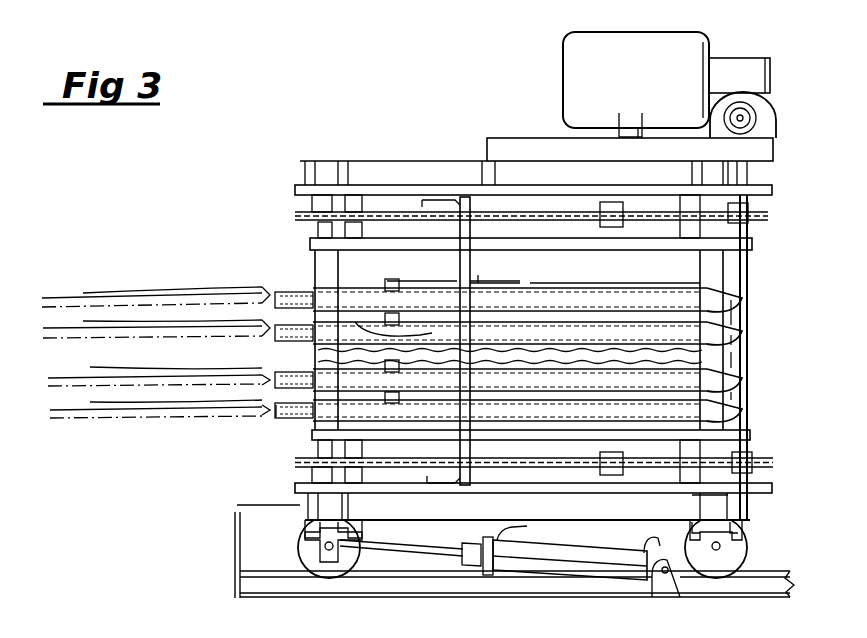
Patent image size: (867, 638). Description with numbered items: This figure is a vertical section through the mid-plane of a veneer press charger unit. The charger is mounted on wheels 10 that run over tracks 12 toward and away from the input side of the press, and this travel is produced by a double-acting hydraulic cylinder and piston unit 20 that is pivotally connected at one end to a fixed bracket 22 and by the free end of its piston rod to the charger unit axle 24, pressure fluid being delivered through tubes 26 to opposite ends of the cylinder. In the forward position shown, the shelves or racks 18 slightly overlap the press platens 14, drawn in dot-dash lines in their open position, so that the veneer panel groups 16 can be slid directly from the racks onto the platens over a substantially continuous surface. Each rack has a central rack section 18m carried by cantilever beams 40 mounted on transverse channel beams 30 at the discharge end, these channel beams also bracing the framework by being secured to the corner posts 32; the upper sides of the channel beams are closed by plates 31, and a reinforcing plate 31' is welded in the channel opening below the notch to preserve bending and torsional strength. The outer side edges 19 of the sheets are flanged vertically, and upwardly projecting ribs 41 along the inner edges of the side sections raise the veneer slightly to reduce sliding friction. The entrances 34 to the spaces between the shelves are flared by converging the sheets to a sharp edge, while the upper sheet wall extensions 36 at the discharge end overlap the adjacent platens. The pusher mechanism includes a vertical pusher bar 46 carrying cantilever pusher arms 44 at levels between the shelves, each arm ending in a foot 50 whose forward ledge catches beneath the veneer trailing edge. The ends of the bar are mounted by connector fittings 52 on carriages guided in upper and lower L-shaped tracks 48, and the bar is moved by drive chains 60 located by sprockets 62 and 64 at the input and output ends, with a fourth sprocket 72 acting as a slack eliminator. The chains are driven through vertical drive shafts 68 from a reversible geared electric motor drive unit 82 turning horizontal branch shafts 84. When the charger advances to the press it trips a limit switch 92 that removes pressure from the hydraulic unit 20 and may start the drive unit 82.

The wheels 10 is at (318, 540).
The tracks 12 is at (776, 590).
The press platens 14 is at (55, 372).
The veneer panel groups 16 is at (165, 290).
The shelves or racks 18 is at (616, 280).
The central rack section 18m is at (509, 301).
The outer side edges 19 is at (480, 282).
The double-acting hydraulic cylinder and piston unit 20 is at (606, 585).
The fixed bracket 22 is at (680, 588).
The charger unit axle 24 is at (318, 549).
The tubes 26 is at (527, 526).
The channel beams 30 is at (272, 342).
The plates 31 is at (246, 439).
The reinforcing plate 31' is at (271, 446).
The corner posts 32 is at (717, 257).
The entrances 34 is at (732, 313).
The upper sheet wall extensions 36 is at (250, 420).
The cantilever beams 40 is at (741, 296).
The upwardly projecting ribs 41 is at (588, 282).
The cantilever pusher arms 44 is at (392, 312).
The vertical pusher bar 46 is at (460, 262).
The L-shaped tracks 48 is at (299, 190).
The foot 50 is at (404, 333).
The connector fittings 52 is at (457, 200).
The drive chains 60 is at (398, 222).
The chain-locating sprocket 62 is at (750, 222).
The chain-locating sprocket 64 is at (296, 213).
The vertical drive shafts 68 is at (746, 338).
The fourth sprocket 72 is at (622, 226).
The reversible geared electric motor drive unit 82 is at (730, 63).
The horizontal branch shafts 84 is at (742, 121).
The limit switch 92 is at (273, 505).